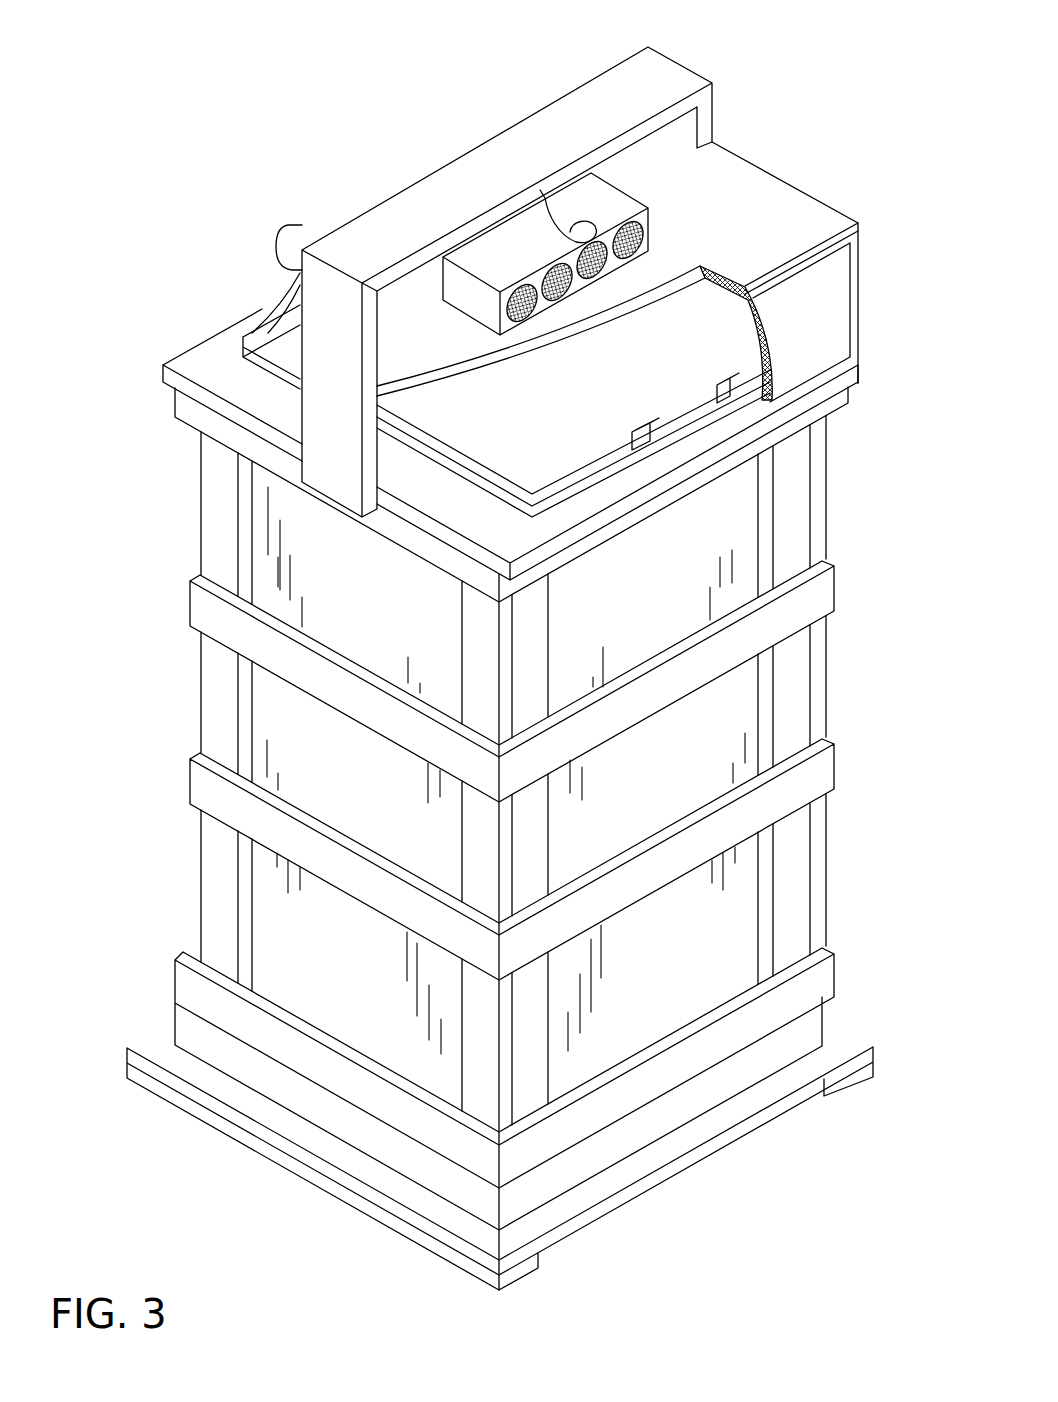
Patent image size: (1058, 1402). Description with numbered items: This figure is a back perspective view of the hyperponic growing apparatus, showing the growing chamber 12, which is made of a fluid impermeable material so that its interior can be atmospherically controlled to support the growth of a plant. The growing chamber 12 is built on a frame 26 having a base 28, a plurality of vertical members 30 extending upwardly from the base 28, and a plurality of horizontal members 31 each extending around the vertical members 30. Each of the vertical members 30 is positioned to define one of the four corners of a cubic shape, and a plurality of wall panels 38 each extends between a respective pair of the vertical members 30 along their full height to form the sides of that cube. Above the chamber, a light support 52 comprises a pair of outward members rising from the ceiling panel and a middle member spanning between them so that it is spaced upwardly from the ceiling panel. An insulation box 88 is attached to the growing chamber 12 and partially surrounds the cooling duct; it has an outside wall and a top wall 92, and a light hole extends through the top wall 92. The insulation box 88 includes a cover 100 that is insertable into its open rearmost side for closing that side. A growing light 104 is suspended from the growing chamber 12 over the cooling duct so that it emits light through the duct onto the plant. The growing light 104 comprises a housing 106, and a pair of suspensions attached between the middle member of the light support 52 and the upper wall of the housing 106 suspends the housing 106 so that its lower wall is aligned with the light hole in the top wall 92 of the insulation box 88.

The growing chamber 12 is at (138, 421).
The frame 26 is at (190, 690).
The base 28 is at (850, 1055).
The vertical members 30 is at (200, 880).
The horizontal members 31 is at (840, 590).
The wall panels 38 is at (352, 990).
The light support 52 is at (688, 62).
The insulation box 88 is at (775, 208).
The top wall 92 is at (430, 360).
The cover 100 is at (818, 305).
The growing light 104 is at (500, 250).
The housing 106 is at (592, 203).